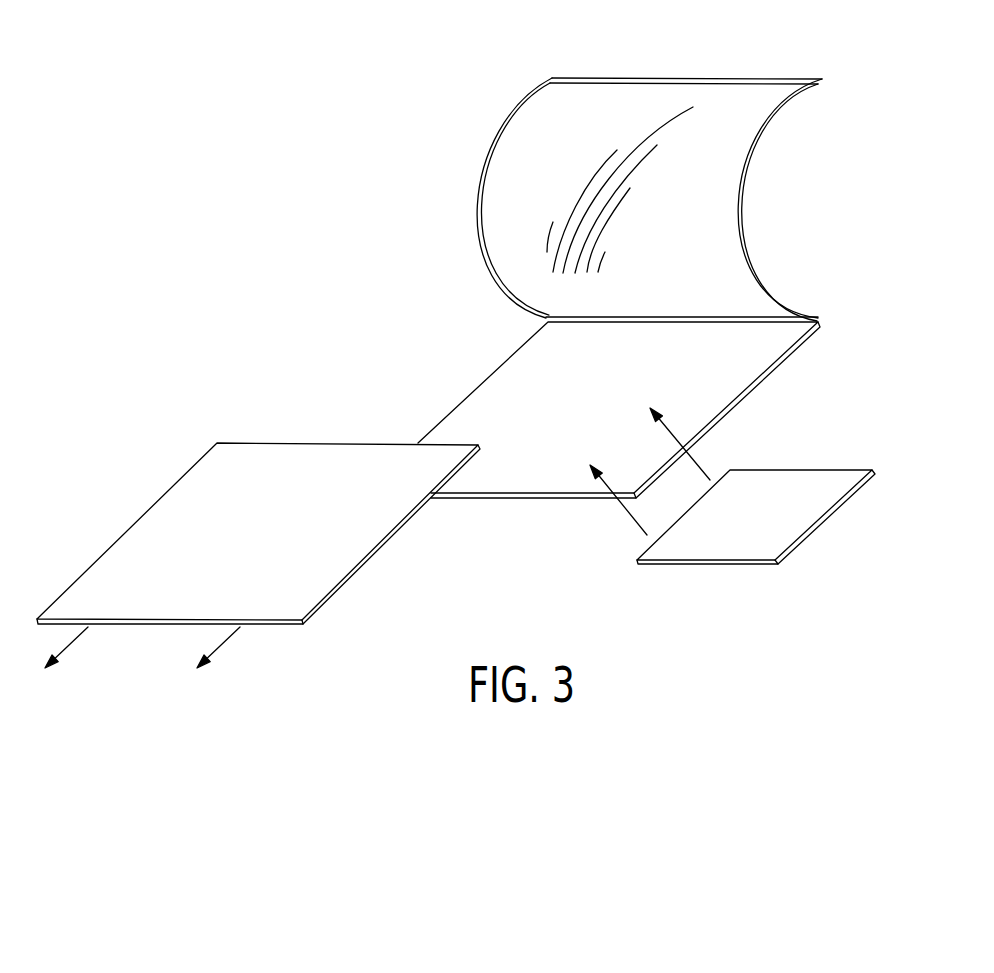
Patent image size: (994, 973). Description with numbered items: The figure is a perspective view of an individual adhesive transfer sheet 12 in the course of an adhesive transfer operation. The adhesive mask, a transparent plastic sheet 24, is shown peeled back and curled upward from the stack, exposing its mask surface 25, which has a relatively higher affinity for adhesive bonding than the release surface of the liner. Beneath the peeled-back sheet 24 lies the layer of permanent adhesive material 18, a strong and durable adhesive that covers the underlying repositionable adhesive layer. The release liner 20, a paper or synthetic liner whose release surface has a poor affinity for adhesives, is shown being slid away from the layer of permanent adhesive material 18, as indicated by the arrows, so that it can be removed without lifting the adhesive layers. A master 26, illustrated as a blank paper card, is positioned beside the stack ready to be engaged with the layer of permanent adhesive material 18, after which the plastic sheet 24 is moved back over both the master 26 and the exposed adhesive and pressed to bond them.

The adhesive transfer sheet 12 is at (807, 409).
The layer of permanent adhesive material 18 is at (490, 392).
The release liner 20 is at (300, 568).
The transparent plastic sheet 24 is at (525, 128).
The mask surface 25 is at (650, 100).
The master 26 is at (748, 542).